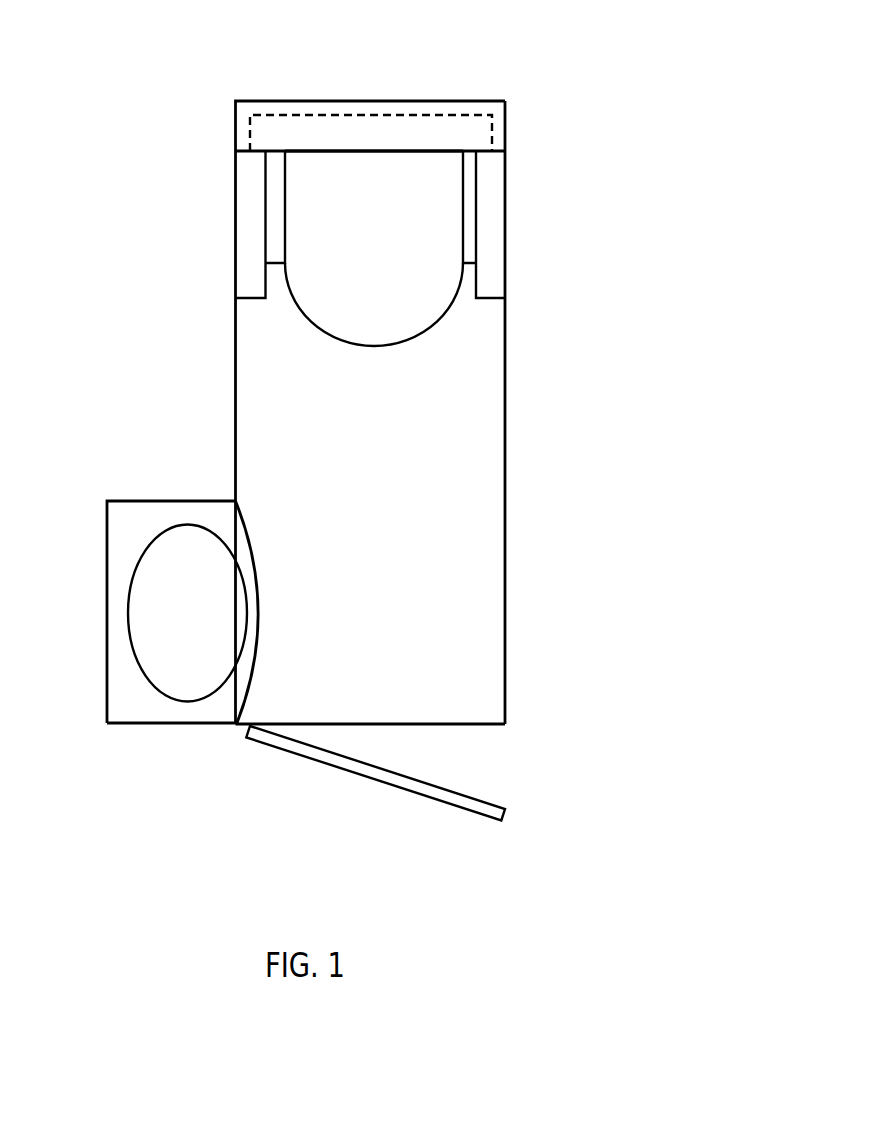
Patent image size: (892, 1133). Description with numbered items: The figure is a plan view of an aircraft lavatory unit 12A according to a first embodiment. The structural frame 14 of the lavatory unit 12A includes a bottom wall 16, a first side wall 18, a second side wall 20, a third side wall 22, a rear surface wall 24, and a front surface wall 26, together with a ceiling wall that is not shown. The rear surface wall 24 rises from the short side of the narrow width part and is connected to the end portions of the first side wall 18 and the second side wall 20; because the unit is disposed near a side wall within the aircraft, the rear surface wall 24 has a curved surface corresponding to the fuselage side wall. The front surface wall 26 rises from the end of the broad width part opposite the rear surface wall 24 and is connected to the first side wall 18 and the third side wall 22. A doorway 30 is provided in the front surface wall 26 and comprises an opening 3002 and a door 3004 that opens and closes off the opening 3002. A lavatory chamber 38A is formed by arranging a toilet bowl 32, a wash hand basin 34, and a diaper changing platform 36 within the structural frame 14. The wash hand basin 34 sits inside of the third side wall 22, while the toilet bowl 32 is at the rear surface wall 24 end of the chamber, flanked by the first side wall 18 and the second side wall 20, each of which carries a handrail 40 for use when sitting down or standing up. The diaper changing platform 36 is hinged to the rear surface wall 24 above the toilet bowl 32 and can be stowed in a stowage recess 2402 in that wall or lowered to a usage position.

The aircraft lavatory unit 12A is at (323, 464).
The structural frame 14 is at (235, 343).
The bottom wall 16 is at (437, 505).
The first side wall 18 is at (505, 432).
The second side wall 20 is at (235, 205).
The third side wall 22 is at (107, 548).
The rear surface wall 24 is at (367, 100).
The stowage recess 2402 is at (314, 114).
The front surface wall 26 is at (218, 727).
The doorway 30 is at (433, 819).
The opening 3002 is at (447, 725).
The door 3004 is at (450, 808).
The toilet bowl 32 is at (408, 343).
The wash hand basin 34 is at (177, 625).
The diaper changing platform 36 is at (375, 152).
The lavatory chamber 38A is at (333, 504).
The handrails 40 is at (235, 260).